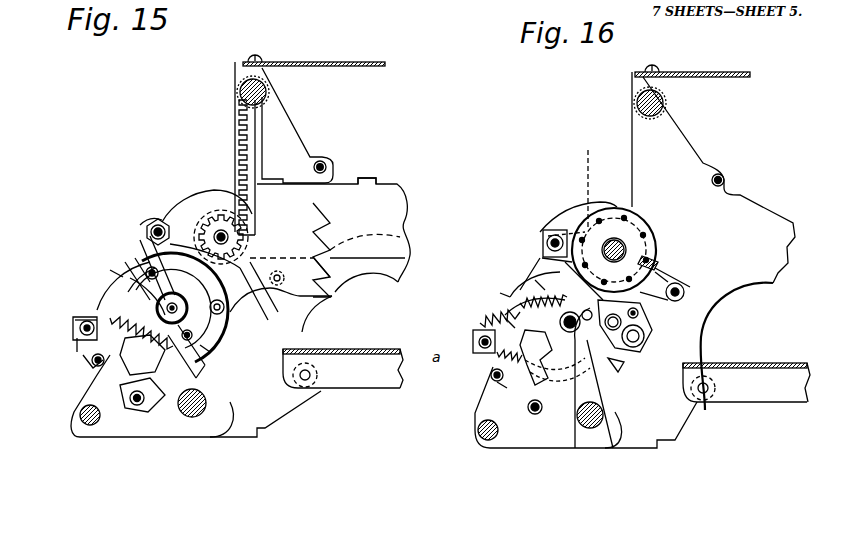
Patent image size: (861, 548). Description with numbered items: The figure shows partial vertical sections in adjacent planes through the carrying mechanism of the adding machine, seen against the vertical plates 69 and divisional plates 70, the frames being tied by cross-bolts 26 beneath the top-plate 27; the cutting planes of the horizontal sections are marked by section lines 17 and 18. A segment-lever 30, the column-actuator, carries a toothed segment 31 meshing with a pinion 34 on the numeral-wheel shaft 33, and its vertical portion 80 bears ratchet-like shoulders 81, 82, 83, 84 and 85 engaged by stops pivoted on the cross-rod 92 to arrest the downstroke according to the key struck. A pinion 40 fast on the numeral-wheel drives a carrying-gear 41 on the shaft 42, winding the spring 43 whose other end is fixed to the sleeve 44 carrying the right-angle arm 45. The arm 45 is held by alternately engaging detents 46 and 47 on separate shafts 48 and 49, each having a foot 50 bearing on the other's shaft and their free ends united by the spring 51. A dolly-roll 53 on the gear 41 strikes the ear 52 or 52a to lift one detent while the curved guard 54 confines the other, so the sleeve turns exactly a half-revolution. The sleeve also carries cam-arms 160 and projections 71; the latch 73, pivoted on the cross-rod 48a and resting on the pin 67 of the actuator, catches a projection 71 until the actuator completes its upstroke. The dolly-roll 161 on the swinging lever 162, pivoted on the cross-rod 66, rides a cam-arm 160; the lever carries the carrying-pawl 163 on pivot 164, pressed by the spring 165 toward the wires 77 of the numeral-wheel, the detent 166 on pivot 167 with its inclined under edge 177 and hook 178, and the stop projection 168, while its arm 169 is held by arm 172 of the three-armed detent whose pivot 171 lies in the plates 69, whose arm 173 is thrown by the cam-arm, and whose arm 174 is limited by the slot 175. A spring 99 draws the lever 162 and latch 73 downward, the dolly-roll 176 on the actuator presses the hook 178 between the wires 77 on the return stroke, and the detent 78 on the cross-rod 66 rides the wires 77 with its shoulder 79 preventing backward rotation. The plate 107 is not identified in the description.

In FIG. 15, the section line 17 is at (114, 257).
In FIG. 16, the section line 17 is at (424, 262).
In FIG. 15, the section line 18 is at (53, 351).
In FIG. 15, the cross-bolts 26 is at (240, 92).
In FIG. 16, the cross-bolts 26 is at (665, 103).
In FIG. 15, the top-plate 27 is at (314, 62).
In FIG. 16, the top-plate 27 is at (740, 80).
In FIG. 15, the segment-lever 30 is at (396, 184).
In FIG. 15, the toothed segment 31 is at (238, 146).
In FIG. 15, the shaft 33 is at (227, 232).
In FIG. 16, the shaft 33 is at (623, 238).
In FIG. 15, the pinion 34 is at (212, 202).
In FIG. 16, the pinion 40 is at (588, 183).
In FIG. 16, the carrying-gear 41 is at (510, 277).
In FIG. 15, the shaft 42 is at (148, 230).
In FIG. 15, the spring 43 is at (130, 278).
In FIG. 15, the sleeve 44 is at (170, 370).
In FIG. 15, the right-angle arm 45 is at (212, 335).
In FIG. 15, the detent 46 is at (128, 292).
In FIG. 15, the detent 47 is at (190, 352).
In FIG. 15, the shaft 48 is at (80, 327).
In FIG. 16, the cross-rod 48a is at (472, 343).
In FIG. 15, the shaft 49 is at (136, 408).
In FIG. 16, the shaft 49 is at (536, 413).
In FIG. 15, the foot 50 is at (112, 360).
In FIG. 15, the spring 51 is at (75, 318).
In FIG. 15, the ear 52 is at (135, 258).
In FIG. 15, the ear 52a is at (200, 345).
In FIG. 15, the dolly-roll 53 is at (132, 268).
In FIG. 16, the dolly-roll 53 is at (535, 280).
In FIG. 15, the curved guard 54 is at (193, 338).
In FIG. 15, the cross-rod 66 is at (157, 220).
In FIG. 16, the cross-rod 66 is at (555, 235).
In FIG. 15, the pin 67 is at (226, 309).
In FIG. 15, the vertical plates 69 is at (78, 415).
In FIG. 16, the vertical plates 69 is at (573, 433).
In FIG. 15, the divisional plates 70 is at (287, 137).
In FIG. 15, the projections 71 is at (220, 382).
In FIG. 15, the latch 73 is at (110, 270).
In FIG. 16, the wires 77 is at (650, 252).
In FIG. 15, the detent 78 is at (187, 200).
In FIG. 16, the detent 78 is at (597, 208).
In FIG. 16, the shoulder 79 is at (500, 293).
In FIG. 15, the vertical portion 80 is at (306, 250).
In FIG. 15, the shoulder 81 is at (380, 200).
In FIG. 15, the shoulder 82 is at (308, 256).
In FIG. 15, the shoulder 83 is at (365, 234).
In FIG. 15, the shoulder 84 is at (362, 270).
In FIG. 15, the shoulder 85 is at (334, 297).
In FIG. 15, the cross-rod 92 is at (328, 162).
In FIG. 16, the cross-rod 92 is at (722, 174).
In FIG. 16, the spring 99 is at (505, 318).
In FIG. 15, the plate 107 is at (347, 380).
In FIG. 16, the plate 107 is at (746, 382).
In FIG. 15, the cam-arms 160 is at (305, 315).
In FIG. 16, the cam-arms 160 is at (607, 365).
In FIG. 16, the dolly-roll 161 is at (573, 410).
In FIG. 16, the swinging lever 162 is at (530, 277).
In FIG. 16, the carrying-pawl 163 is at (710, 313).
In FIG. 16, the pivot 164 is at (690, 340).
In FIG. 16, the spring 165 is at (620, 362).
In FIG. 16, the detent 166 is at (662, 277).
In FIG. 16, the pivot 167 is at (640, 324).
In FIG. 16, the stop projection 168 is at (655, 262).
In FIG. 16, the arm 169 is at (497, 290).
In FIG. 16, the pivot 171 is at (527, 360).
In FIG. 16, the arm 172 is at (500, 345).
In FIG. 16, the arm 173 is at (530, 280).
In FIG. 16, the arm 174 is at (497, 382).
In FIG. 15, the slot 175 is at (83, 360).
In FIG. 16, the slot 175 is at (492, 375).
In FIG. 15, the dolly-roll 176 is at (285, 278).
In FIG. 16, the dolly-roll 176 is at (686, 291).
In FIG. 16, the inclined under edge 177 is at (755, 293).
In FIG. 16, the hook 178 is at (745, 200).